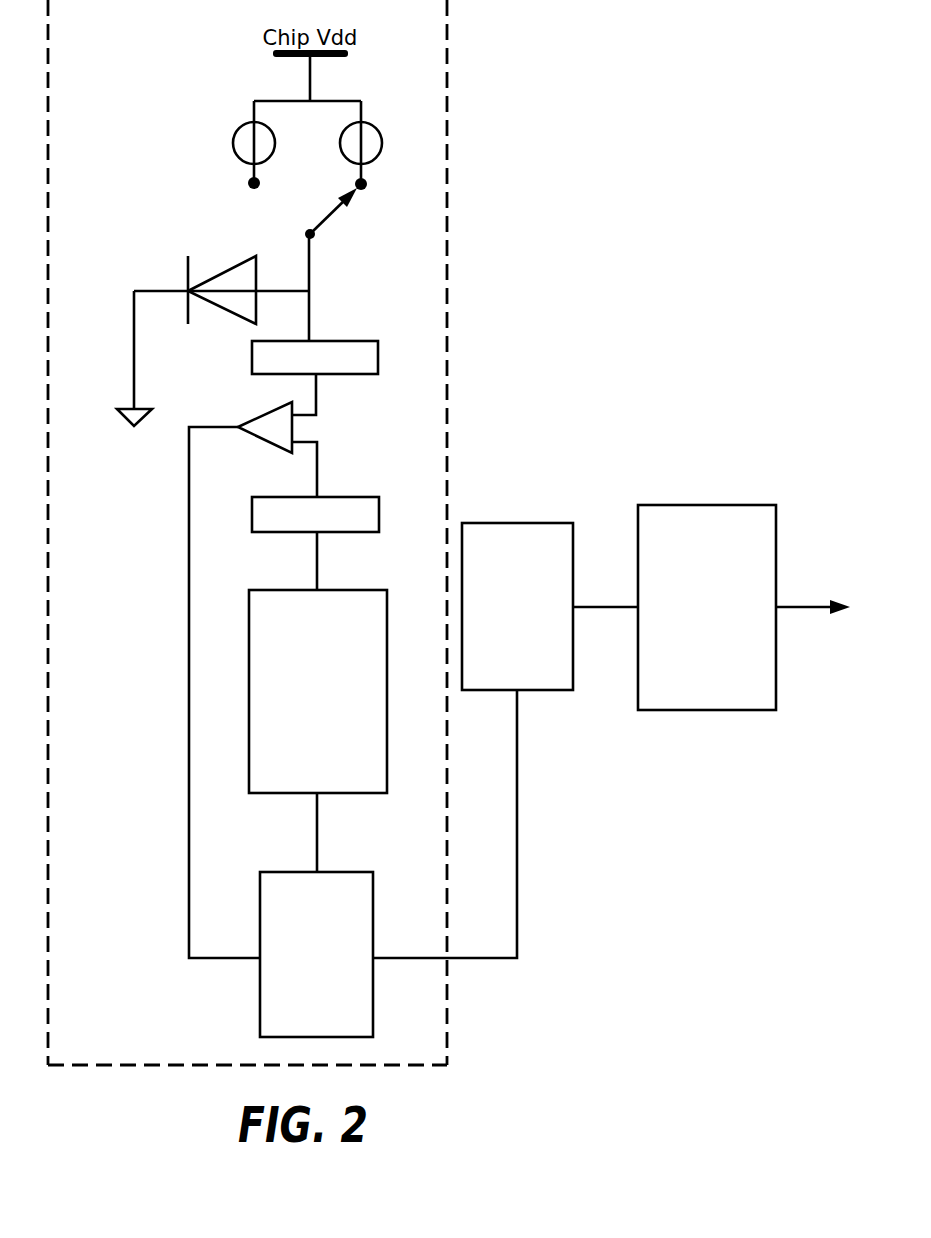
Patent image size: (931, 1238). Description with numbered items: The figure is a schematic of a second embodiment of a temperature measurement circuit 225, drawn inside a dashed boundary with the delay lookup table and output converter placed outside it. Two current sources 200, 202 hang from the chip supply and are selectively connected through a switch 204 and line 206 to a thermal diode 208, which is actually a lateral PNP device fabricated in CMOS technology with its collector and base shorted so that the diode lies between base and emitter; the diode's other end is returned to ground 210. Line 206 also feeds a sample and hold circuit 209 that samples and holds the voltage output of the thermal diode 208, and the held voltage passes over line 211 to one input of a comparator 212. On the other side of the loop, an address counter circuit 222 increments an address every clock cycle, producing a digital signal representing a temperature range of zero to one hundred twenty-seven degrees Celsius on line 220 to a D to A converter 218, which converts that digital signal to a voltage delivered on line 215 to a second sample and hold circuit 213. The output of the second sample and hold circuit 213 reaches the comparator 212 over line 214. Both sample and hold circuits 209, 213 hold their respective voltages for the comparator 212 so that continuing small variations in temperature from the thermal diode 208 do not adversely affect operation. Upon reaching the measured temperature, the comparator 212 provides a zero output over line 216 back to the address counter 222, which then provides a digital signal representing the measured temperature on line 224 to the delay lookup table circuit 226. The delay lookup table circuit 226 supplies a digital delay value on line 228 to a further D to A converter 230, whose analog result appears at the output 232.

The current source 200 is at (228, 147).
The current source 202 is at (383, 142).
The switch 204 is at (330, 220).
The line 206 is at (314, 277).
The thermal diode 208 is at (216, 270).
The sample and hold circuit 209 is at (378, 354).
The ground connection 210 is at (128, 355).
The sample/hold output line 211 is at (326, 399).
The comparator 212 is at (252, 415).
The second sample and hold circuit 213 is at (379, 502).
The buffer output line 214 is at (318, 471).
The line 215 is at (317, 558).
The line 216 is at (185, 642).
The D to A converter 218 is at (318, 691).
The line 220 is at (317, 815).
The address counter circuit 222 is at (316, 954).
The line 224 is at (517, 765).
The temperature measurement circuit 225 is at (247, 532).
The delay lookup table circuit 226 is at (517, 606).
The line 228 is at (613, 608).
The D to A converter 230 is at (707, 607).
The analog output 232 is at (790, 610).